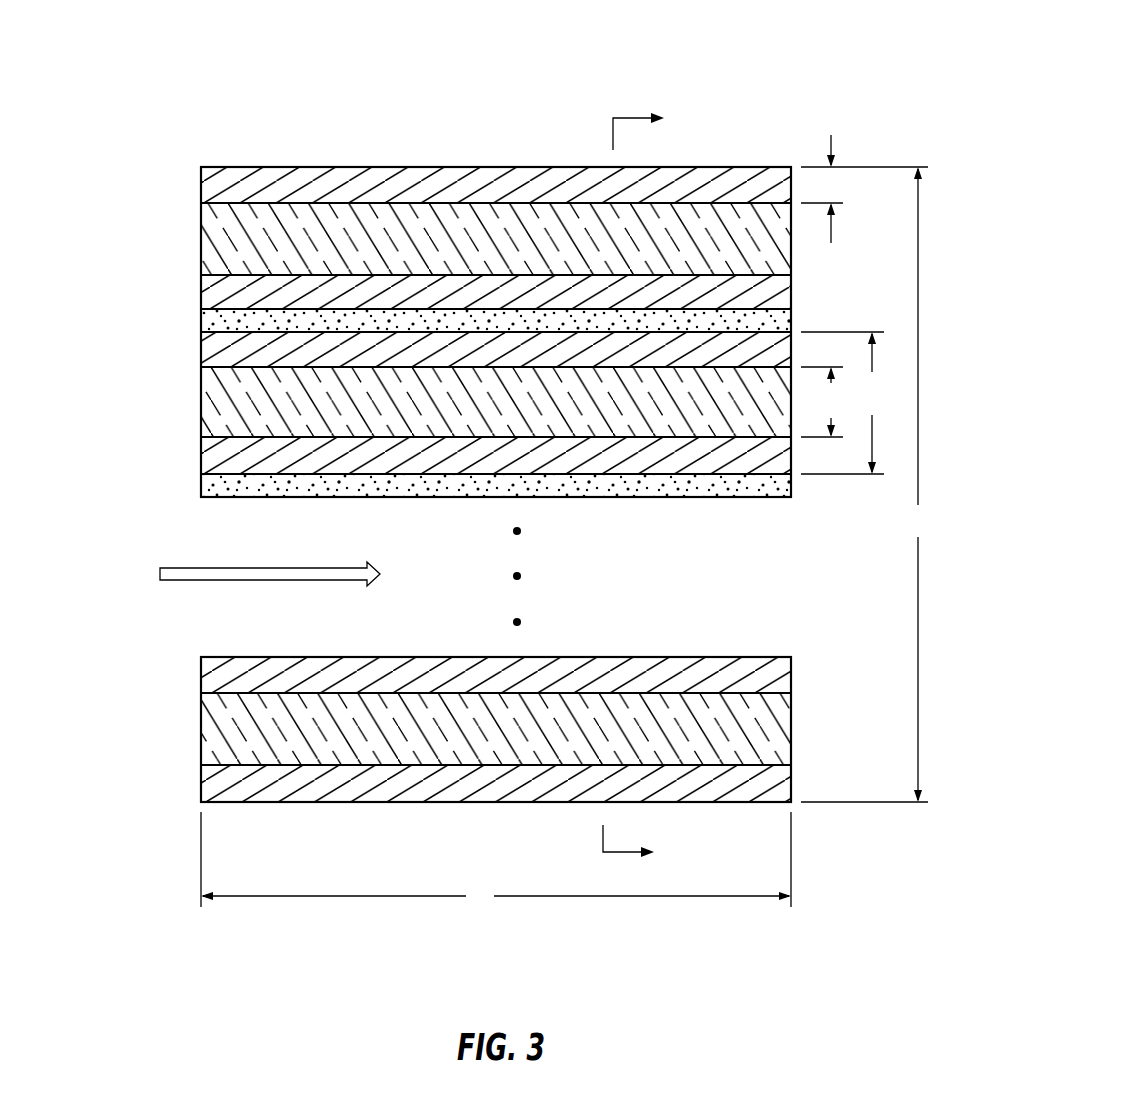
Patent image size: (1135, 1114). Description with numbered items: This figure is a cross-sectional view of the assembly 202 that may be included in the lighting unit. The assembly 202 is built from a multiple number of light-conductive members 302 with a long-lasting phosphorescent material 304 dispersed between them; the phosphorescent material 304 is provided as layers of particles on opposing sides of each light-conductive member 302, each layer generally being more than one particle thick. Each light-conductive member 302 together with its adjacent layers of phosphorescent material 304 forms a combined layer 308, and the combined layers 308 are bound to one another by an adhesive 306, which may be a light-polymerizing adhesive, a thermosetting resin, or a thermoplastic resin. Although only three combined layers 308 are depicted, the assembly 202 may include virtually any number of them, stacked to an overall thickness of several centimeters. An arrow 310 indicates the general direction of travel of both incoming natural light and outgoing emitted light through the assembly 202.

The assembly 202 is at (709, 56).
The light-conductive member 302 is at (232, 240).
The long-lasting phosphorescent material 304 is at (208, 191).
The adhesive 306 is at (182, 318).
The combined layer 308 is at (113, 167).
The arrow 310 is at (282, 567).